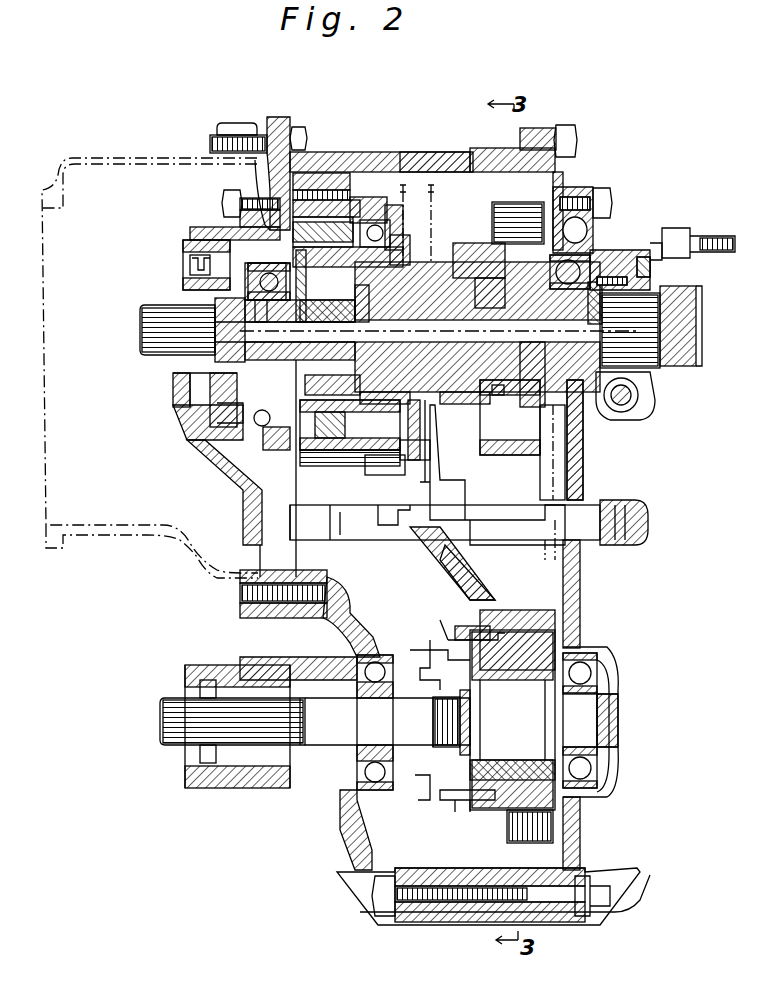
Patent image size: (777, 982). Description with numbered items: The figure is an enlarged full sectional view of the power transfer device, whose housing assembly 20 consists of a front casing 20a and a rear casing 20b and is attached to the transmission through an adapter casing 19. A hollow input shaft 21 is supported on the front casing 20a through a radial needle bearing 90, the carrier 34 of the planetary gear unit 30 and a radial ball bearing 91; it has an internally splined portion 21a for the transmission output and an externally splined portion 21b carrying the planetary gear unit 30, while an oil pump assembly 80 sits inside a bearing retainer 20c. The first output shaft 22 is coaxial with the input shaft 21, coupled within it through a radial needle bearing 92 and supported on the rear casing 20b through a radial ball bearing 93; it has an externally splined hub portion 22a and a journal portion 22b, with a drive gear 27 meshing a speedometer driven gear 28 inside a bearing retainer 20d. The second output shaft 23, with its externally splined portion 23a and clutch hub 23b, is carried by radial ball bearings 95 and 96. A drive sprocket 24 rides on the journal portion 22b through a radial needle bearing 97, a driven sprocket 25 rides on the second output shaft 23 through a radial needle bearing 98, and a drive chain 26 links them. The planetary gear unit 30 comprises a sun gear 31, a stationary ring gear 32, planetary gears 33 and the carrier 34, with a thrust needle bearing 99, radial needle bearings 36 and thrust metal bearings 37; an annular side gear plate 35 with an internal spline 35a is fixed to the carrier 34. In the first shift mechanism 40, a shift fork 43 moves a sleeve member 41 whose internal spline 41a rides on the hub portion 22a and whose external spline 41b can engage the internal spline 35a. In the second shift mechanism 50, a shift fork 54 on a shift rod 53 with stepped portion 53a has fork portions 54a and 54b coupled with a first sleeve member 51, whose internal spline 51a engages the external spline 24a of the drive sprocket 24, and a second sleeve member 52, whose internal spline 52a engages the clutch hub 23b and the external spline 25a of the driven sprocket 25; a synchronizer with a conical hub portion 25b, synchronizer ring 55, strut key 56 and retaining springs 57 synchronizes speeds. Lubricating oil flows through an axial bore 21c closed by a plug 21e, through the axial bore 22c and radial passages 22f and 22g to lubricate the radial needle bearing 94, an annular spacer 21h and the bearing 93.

The adapter casing 19 is at (150, 160).
The housing assembly 20 is at (333, 615).
The front casing 20a is at (445, 150).
The rear casing 20b is at (558, 125).
The bearing retainer 20c is at (215, 228).
The bearing retainer 20d is at (590, 186).
The input shaft 21 is at (180, 362).
The internally splined portion 21a is at (150, 332).
The externally splined portion 21b is at (345, 310).
The axial bore 21c is at (172, 380).
The plug 21e is at (200, 310).
The annular spacer 21h is at (575, 460).
The first output shaft 22 is at (690, 335).
The externally splined hub portion 22a is at (477, 291).
The journal portion 22b is at (523, 330).
The axial bore 22c is at (445, 340).
The radial passage 22f is at (482, 330).
The radial passage 22g is at (563, 330).
The second output shaft 23 is at (160, 726).
The externally splined portion 23a is at (180, 740).
The clutch hub 23b is at (445, 770).
The drive sprocket 24 is at (522, 440).
The external spline 24a is at (480, 248).
The driven sprocket 25 is at (522, 608).
The external spline 25a is at (485, 800).
The conical hub portion 25b is at (488, 762).
The drive chain 26 is at (522, 202).
The drive gear 27 is at (617, 277).
The driven gear 28 is at (628, 415).
The planetary gear unit 30 is at (375, 190).
The sun gear 31 is at (349, 433).
The stationary ring gear 32 is at (322, 175).
The planetary gears 33 is at (355, 197).
The carrier 34 is at (215, 418).
The annular side gear plate 35 is at (388, 210).
The internal spline 35a is at (388, 243).
The radial needle bearings 36 is at (310, 300).
The thrust metal bearings 37 is at (292, 150).
The first shift mechanism 40 is at (417, 450).
The sleeve member 41 is at (415, 420).
The internal spline 41a is at (385, 392).
The external spline 41b is at (334, 426).
The shift fork 43 is at (412, 478).
The second shift mechanism 50 is at (444, 550).
The first sleeve member 51 is at (452, 262).
The internal spline 51a is at (455, 392).
The second sleeve member 52 is at (448, 802).
The internal spline 52a is at (462, 805).
The shift rod 53 is at (600, 515).
The stepped portion 53a is at (392, 525).
The shift fork 54 is at (540, 545).
The fork portion 54a is at (540, 475).
The fork portion 54b is at (470, 565).
The synchronizer ring 55 is at (462, 626).
The strut key 56 is at (420, 650).
The retaining springs 57 is at (438, 640).
The oil pump assembly 80 is at (205, 255).
The radial needle bearing 90 is at (272, 302).
The radial ball bearing 91 is at (240, 435).
The radial needle bearing 92 is at (258, 308).
The radial ball bearing 93 is at (606, 272).
The radial needle bearing 94 is at (382, 300).
The radial ball bearing 95 is at (372, 790).
The radial ball bearing 96 is at (590, 660).
The radial needle bearing 97 is at (495, 385).
The radial needle bearing 98 is at (522, 688).
The thrust needle bearing 99 is at (332, 383).